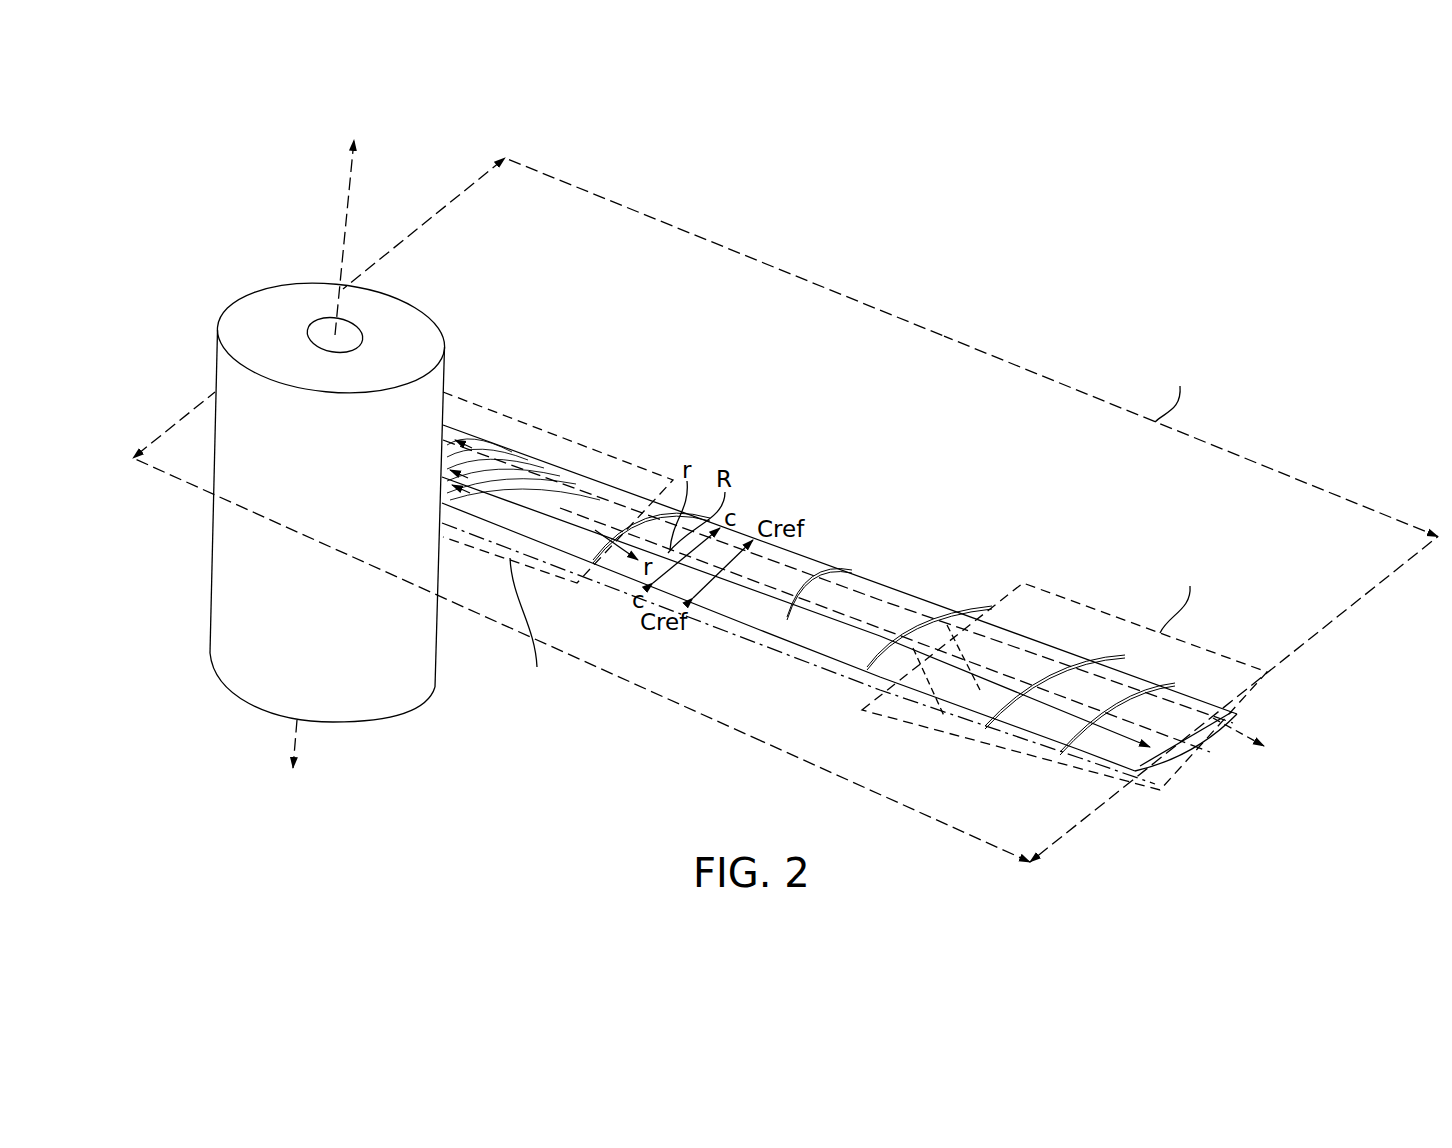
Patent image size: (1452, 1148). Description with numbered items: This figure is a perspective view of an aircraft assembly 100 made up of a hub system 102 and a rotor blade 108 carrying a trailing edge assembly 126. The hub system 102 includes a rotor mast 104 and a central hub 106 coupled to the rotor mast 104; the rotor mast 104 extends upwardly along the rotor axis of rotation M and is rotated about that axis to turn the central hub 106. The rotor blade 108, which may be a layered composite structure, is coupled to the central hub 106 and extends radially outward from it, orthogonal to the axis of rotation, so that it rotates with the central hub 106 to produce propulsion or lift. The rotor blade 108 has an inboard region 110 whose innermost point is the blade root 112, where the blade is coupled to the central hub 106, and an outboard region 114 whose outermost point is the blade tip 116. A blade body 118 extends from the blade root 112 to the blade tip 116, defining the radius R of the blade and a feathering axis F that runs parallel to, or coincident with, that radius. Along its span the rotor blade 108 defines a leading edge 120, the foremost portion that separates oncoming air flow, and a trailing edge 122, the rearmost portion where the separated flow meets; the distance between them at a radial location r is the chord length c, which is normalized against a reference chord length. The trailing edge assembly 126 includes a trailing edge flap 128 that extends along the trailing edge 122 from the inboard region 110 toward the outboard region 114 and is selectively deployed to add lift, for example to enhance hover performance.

The aircraft assembly 100 is at (851, 227).
The hub system 102 is at (242, 278).
The rotor mast 104 is at (331, 322).
The central hub 106 is at (257, 317).
The rotor blade 108 is at (918, 439).
The inboard region 110 is at (573, 470).
The blade root 112 is at (445, 422).
The outboard region 114 is at (952, 627).
The blade tip 116 is at (1236, 718).
The blade body 118 is at (747, 593).
The leading edge 120 is at (903, 590).
The trailing edge 122 is at (803, 647).
The trailing edge assembly 126 is at (793, 587).
The trailing edge flap 128 is at (783, 617).